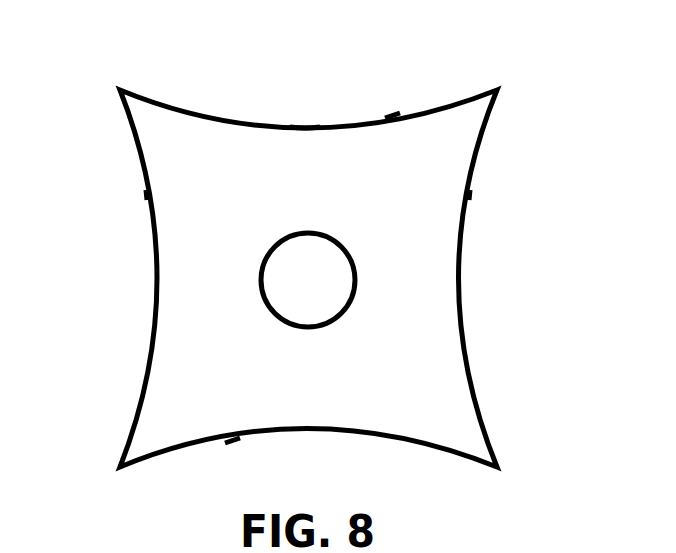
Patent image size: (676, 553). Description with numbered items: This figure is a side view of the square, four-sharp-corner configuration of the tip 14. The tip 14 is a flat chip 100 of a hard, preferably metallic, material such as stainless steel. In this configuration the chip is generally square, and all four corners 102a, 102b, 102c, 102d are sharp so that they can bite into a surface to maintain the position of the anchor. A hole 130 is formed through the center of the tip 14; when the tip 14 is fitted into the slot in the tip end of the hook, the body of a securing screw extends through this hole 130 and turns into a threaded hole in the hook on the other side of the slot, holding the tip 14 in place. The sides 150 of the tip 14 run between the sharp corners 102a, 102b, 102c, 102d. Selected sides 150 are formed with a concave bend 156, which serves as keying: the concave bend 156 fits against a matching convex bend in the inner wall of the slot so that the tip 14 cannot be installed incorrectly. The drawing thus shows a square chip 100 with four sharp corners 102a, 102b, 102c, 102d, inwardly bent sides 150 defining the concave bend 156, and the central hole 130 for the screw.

The tip 14 is at (158, 67).
The flat chip 100 is at (215, 117).
The corner 102a is at (120, 90).
The corner 102b is at (497, 90).
The corner 102c is at (497, 467).
The corner 102d is at (120, 467).
The hole 130 is at (357, 278).
The sides 150 is at (397, 115).
The concave bend 156 is at (306, 125).